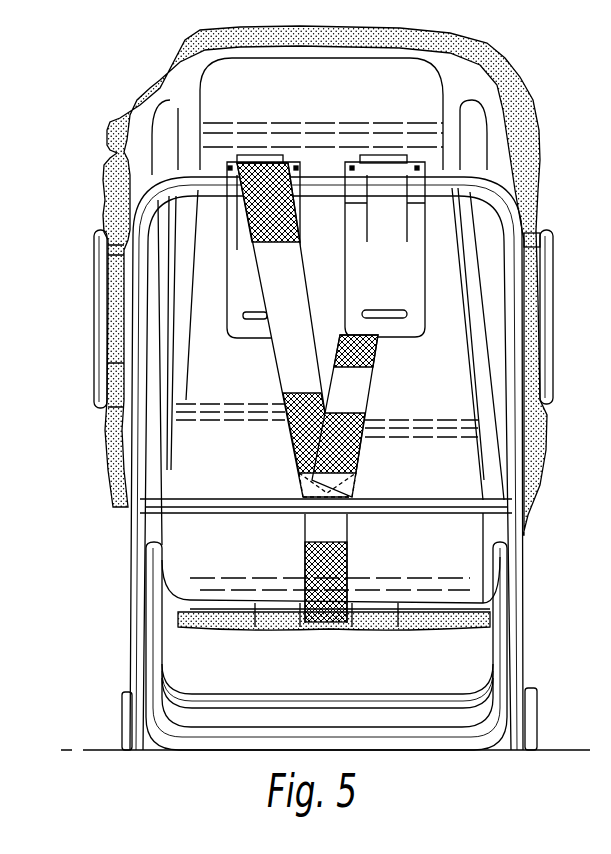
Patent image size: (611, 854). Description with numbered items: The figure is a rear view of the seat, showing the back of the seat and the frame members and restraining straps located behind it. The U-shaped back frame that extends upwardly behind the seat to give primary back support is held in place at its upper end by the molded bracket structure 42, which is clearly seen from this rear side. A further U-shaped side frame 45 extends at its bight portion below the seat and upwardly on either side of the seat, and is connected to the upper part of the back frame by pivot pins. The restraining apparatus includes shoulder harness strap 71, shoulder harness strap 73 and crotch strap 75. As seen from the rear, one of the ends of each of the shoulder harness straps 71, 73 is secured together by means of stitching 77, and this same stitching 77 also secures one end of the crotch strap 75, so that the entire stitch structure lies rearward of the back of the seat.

The molded bracket structure 42 is at (227, 257).
The side frame 45 is at (130, 312).
The shoulder harness strap 71 is at (297, 302).
The shoulder harness strap 73 is at (358, 383).
The crotch strap 75 is at (366, 583).
The stitching 77 is at (298, 470).